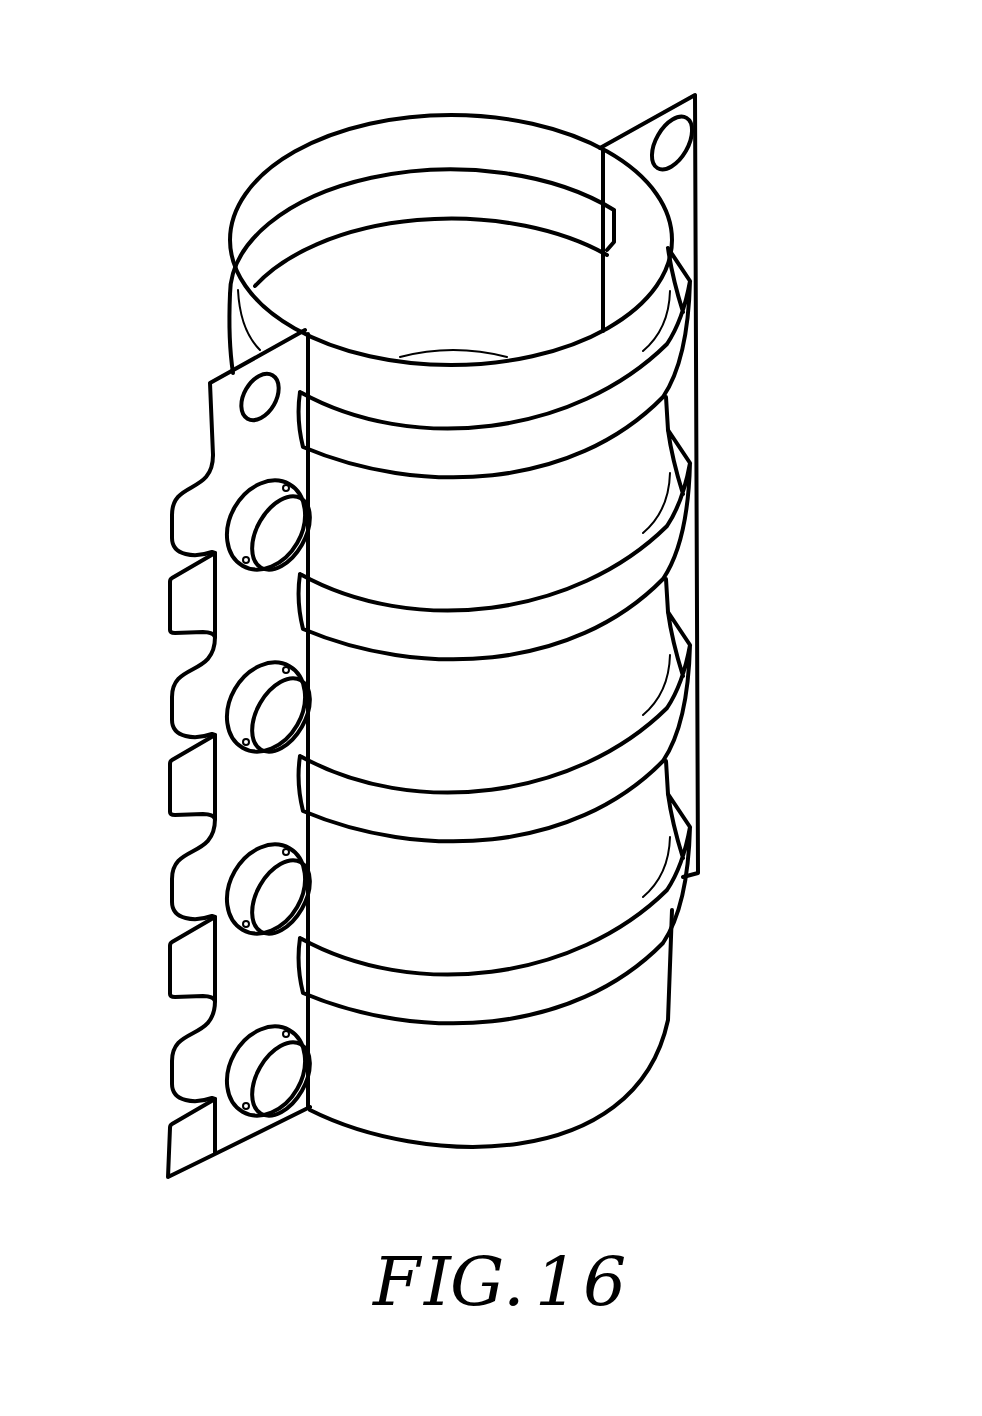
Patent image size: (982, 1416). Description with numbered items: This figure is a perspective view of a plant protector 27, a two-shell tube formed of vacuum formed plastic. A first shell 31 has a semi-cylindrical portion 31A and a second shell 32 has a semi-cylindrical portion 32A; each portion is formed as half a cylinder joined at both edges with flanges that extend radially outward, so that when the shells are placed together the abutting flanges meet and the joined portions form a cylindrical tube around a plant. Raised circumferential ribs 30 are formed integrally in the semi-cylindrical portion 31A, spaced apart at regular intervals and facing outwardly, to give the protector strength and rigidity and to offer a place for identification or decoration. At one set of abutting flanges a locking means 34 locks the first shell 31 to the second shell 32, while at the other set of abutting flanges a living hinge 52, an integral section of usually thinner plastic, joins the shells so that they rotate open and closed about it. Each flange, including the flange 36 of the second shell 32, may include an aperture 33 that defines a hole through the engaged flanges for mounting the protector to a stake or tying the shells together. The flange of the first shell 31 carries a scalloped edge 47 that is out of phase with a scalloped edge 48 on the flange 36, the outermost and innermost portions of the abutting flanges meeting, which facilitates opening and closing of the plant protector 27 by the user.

The plant protector 27 is at (168, 513).
The raised circumferential ribs 30 is at (657, 624).
The first shell 31 is at (363, 115).
The semi-cylindrical portion 31A is at (235, 245).
The second shell 32 is at (665, 1062).
The semi-cylindrical portion 32A is at (626, 861).
The aperture 33 is at (236, 375).
The locking means 34 is at (700, 92).
The flange 36 is at (241, 453).
The scalloped edge 47 is at (170, 597).
The scalloped edge 48 is at (170, 713).
The living hinge 52 is at (715, 116).